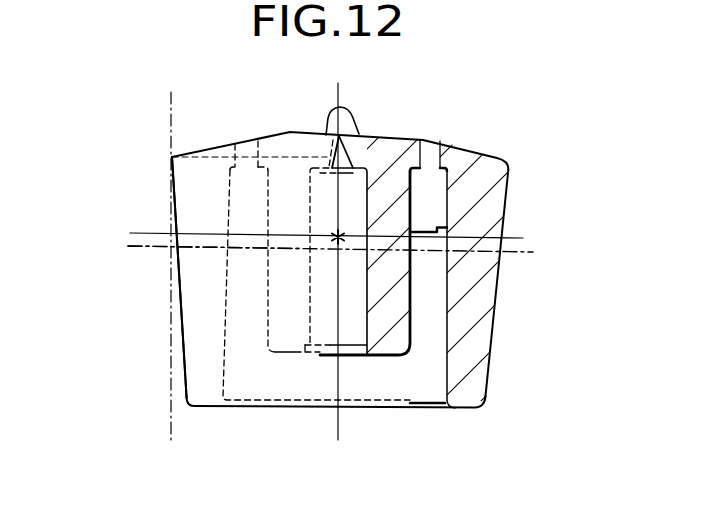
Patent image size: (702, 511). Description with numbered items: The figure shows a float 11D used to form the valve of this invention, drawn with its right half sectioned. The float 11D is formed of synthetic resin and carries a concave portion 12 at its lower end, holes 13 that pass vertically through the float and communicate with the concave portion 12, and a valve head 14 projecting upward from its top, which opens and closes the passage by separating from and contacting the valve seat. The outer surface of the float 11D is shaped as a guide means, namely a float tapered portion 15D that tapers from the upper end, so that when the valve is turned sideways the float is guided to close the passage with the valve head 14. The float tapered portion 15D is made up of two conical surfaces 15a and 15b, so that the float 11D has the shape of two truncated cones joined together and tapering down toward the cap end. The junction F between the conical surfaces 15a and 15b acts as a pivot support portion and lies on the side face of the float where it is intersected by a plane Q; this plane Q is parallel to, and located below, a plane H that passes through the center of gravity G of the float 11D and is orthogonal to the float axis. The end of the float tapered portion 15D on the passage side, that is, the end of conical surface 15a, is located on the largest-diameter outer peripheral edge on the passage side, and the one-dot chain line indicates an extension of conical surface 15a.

The float 11D is at (509, 161).
The concave portion 12 is at (427, 342).
The holes 13 is at (258, 144).
The valve head 14 is at (328, 118).
The conical surface 15a is at (172, 190).
The conical surface 15b is at (183, 359).
The float tapered portion 15D is at (501, 352).
The center of gravity G is at (338, 236).
The plane H is at (523, 238).
The plane Q is at (532, 255).
The junction (pivot support portion) F is at (168, 247).